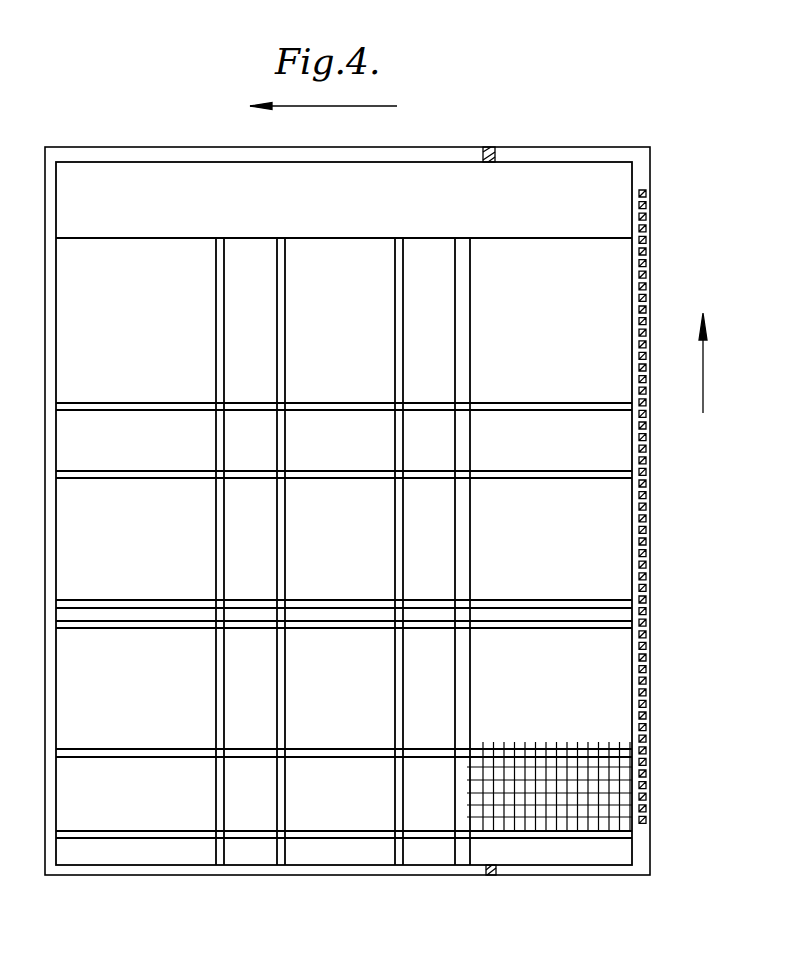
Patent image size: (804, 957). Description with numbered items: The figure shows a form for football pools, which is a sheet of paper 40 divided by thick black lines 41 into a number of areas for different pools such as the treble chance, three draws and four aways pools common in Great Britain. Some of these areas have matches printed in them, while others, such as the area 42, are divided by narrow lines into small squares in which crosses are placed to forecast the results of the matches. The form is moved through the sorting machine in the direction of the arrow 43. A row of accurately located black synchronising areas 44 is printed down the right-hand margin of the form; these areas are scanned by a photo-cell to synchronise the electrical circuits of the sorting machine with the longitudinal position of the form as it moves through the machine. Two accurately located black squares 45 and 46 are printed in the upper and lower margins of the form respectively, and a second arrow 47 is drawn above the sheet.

The sheet of paper 40 is at (273, 878).
The thick black lines 41 is at (519, 623).
The area divided into small squares 42 is at (604, 794).
The arrow 43 is at (703, 371).
The synchronising areas 44 is at (647, 266).
The black square 45 is at (489, 148).
The black square 46 is at (488, 875).
The direction arrow 47 is at (358, 109).